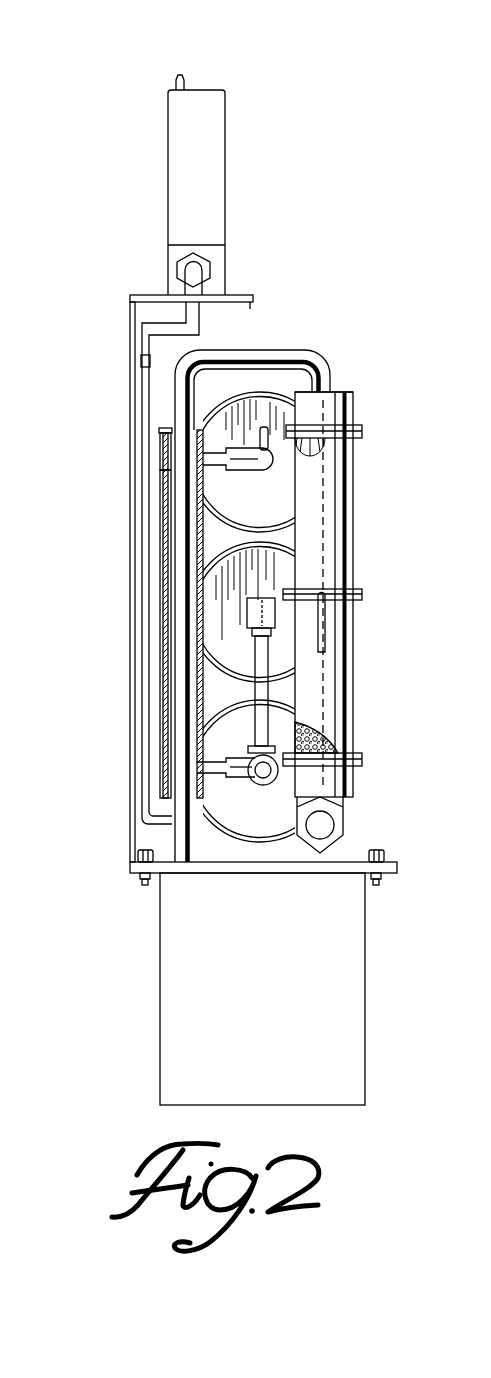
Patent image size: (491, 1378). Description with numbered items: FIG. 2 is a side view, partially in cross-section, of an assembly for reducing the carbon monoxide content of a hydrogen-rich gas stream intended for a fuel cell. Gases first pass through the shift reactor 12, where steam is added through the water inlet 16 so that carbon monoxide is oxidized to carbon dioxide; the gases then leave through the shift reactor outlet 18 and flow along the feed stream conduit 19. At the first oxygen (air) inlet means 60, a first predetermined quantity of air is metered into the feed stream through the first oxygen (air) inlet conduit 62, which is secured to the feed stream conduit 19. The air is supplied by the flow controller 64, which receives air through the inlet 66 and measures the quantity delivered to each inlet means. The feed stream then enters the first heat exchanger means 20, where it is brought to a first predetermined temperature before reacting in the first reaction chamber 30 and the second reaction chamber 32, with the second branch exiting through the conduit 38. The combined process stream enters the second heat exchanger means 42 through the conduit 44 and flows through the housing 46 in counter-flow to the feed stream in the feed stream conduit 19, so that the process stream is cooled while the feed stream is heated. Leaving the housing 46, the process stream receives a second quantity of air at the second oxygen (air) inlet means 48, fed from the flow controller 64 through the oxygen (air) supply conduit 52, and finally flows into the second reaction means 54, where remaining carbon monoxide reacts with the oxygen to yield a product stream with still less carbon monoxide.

The shift reactor 12 is at (355, 517).
The water inlet 16 is at (326, 630).
The shift reactor outlet 18 is at (336, 391).
The feed stream conduit 19 is at (175, 484).
The first heat exchanger means 20 is at (367, 975).
The first reaction chamber 30 is at (282, 719).
The second reaction chamber 32 is at (284, 572).
The conduit 38 is at (268, 667).
The second heat exchanger means 42 is at (160, 432).
The conduit 44 is at (252, 786).
The housing 46 is at (160, 625).
The second oxygen (air) inlet means 48 is at (263, 426).
The oxygen (air) supply conduit 52 is at (259, 452).
The second reaction means 54 is at (286, 386).
The first oxygen (air) inlet means 60 is at (136, 741).
The first oxygen (air) inlet conduit 62 is at (141, 808).
The flow controller 64 is at (227, 245).
The inlet 66 is at (187, 79).